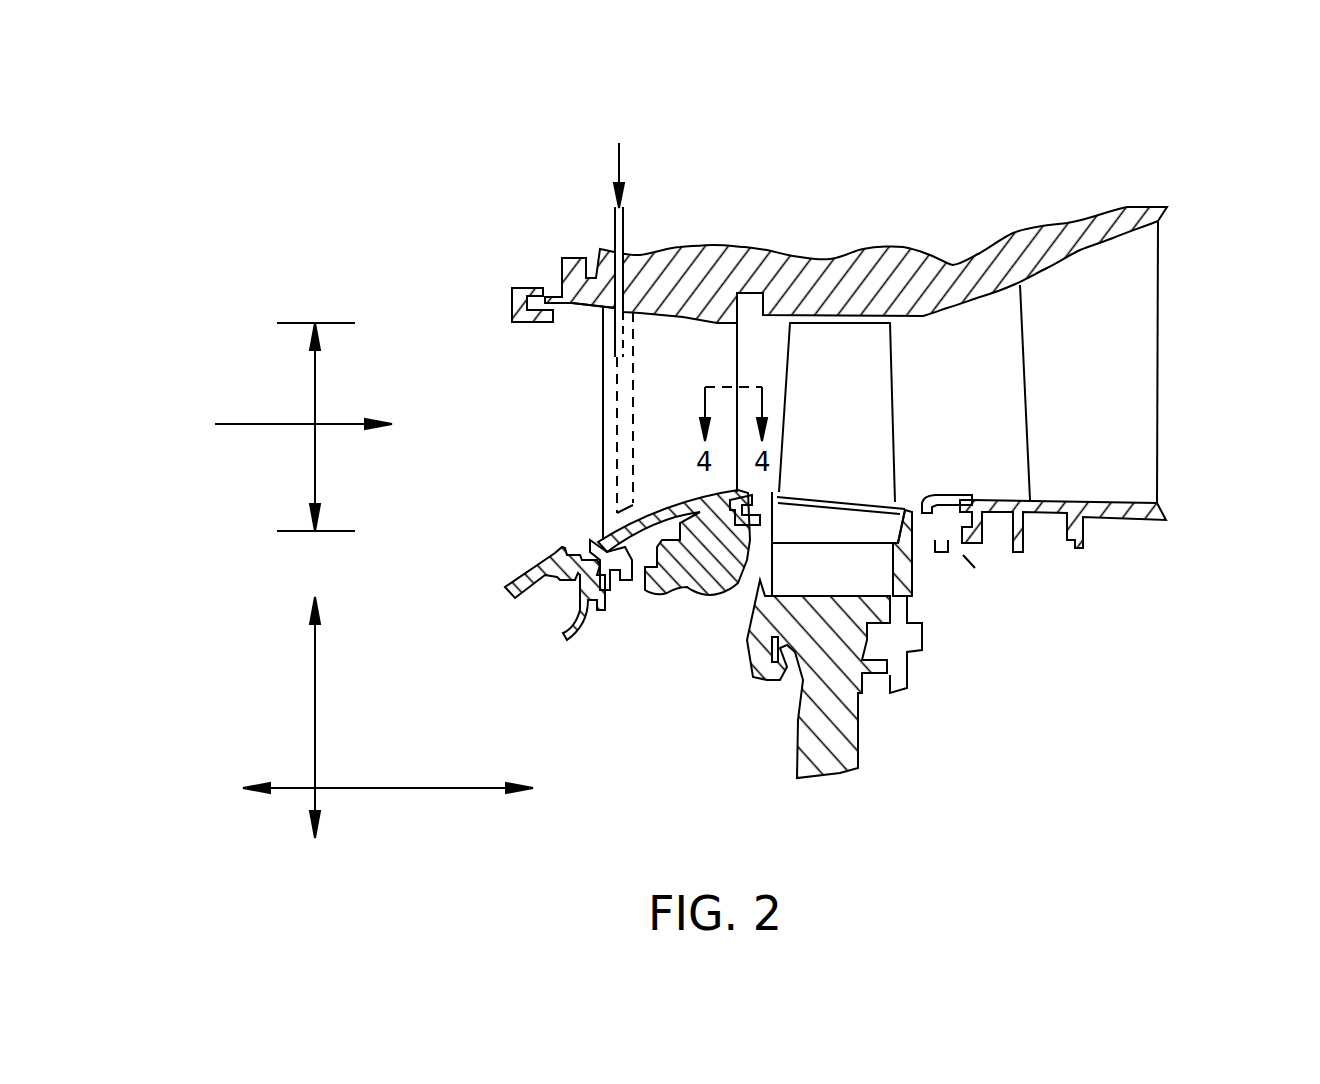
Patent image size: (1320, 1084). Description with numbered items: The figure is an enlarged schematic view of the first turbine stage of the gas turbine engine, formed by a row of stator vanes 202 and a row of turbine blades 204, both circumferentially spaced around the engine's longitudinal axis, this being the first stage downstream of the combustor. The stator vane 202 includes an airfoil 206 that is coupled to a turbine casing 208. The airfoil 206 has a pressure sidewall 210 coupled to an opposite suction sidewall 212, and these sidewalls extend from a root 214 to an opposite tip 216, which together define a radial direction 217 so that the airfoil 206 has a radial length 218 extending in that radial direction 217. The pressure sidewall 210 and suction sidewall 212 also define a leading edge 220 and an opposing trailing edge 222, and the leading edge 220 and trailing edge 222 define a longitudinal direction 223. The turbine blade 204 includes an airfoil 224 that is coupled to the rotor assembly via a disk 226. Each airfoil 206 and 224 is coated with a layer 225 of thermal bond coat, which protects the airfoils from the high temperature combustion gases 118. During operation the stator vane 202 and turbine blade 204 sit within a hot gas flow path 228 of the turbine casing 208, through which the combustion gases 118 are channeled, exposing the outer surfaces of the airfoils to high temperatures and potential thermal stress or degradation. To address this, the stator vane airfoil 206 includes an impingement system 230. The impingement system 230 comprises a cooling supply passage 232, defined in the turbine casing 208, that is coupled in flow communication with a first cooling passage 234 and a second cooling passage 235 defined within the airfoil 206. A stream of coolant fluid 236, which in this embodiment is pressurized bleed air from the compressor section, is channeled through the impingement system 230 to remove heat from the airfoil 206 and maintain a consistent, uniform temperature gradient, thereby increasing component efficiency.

The high temperature combustion gases 118 is at (240, 425).
The stator vane 202 is at (600, 470).
The turbine blade 204 is at (895, 446).
The airfoil 206 is at (716, 367).
The turbine casing 208 is at (623, 585).
The pressure sidewall 210 is at (585, 447).
The suction sidewall 212 is at (662, 418).
The root 214 is at (598, 520).
The tip 216 is at (603, 308).
The radial direction 217 is at (315, 690).
The radial length 218 is at (314, 398).
The leading edge 220 is at (598, 384).
The trailing edge 222 is at (740, 361).
The longitudinal direction 223 is at (422, 787).
The airfoil 224 is at (870, 367).
The layer of thermal bond coat 225 is at (870, 428).
The disk 226 is at (858, 734).
The hot gas flow path 228 is at (940, 310).
The impingement system 230 is at (553, 282).
The cooling supply passage 232 is at (613, 233).
The first cooling passage 234 is at (634, 336).
The second cooling passage 235 is at (704, 328).
The coolant fluid 236 is at (620, 162).